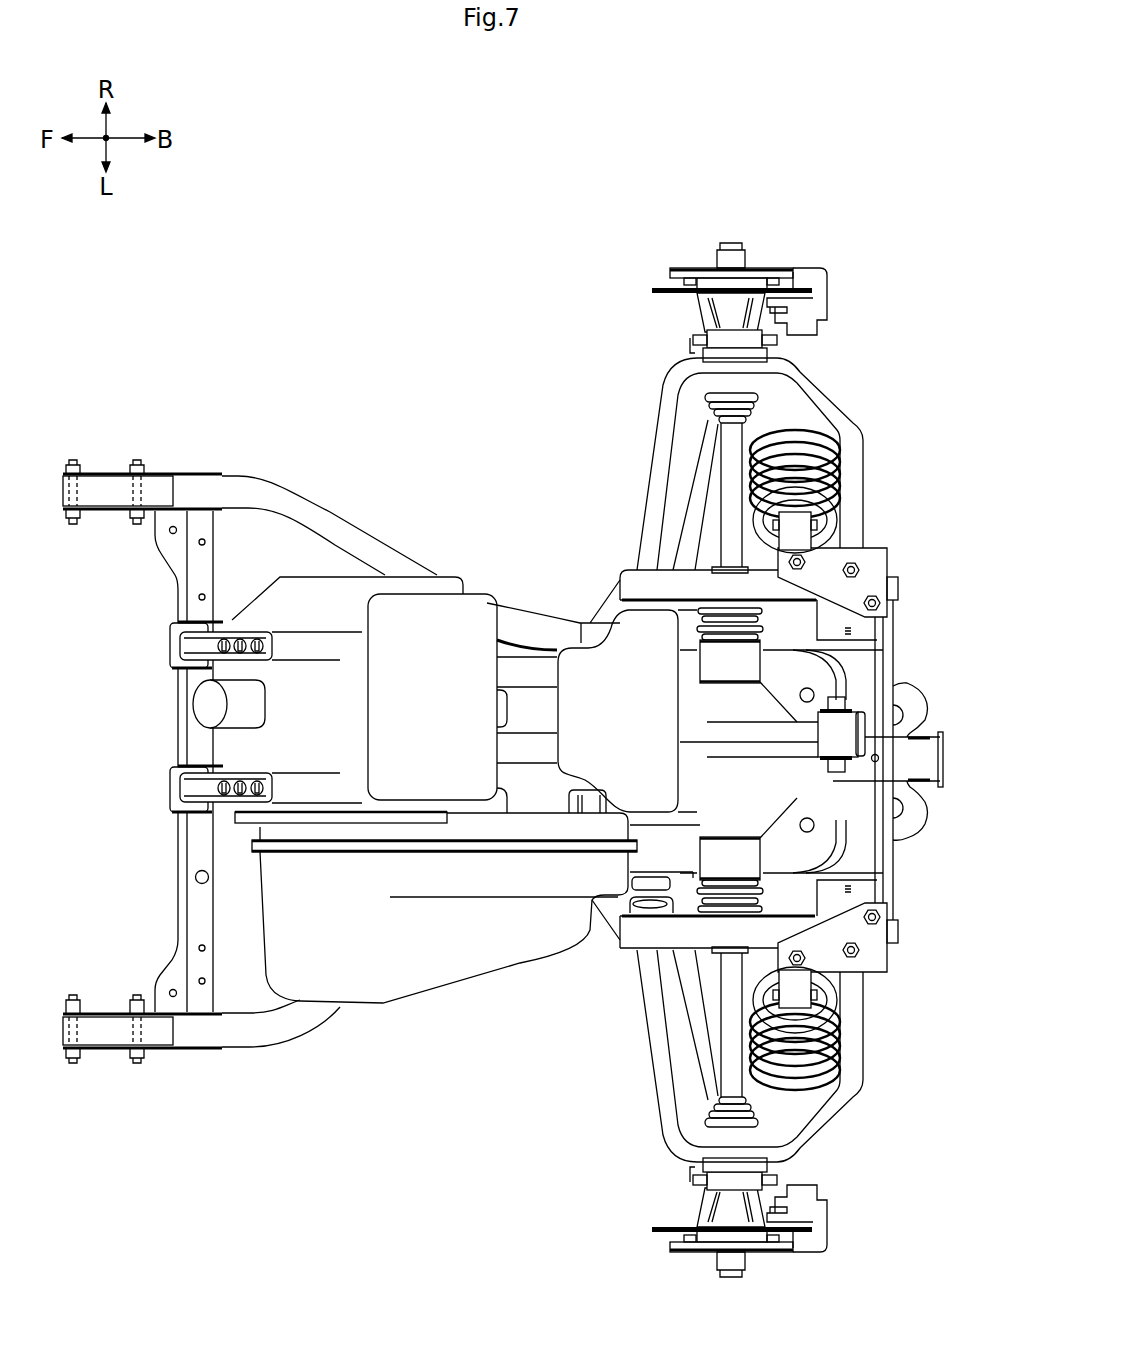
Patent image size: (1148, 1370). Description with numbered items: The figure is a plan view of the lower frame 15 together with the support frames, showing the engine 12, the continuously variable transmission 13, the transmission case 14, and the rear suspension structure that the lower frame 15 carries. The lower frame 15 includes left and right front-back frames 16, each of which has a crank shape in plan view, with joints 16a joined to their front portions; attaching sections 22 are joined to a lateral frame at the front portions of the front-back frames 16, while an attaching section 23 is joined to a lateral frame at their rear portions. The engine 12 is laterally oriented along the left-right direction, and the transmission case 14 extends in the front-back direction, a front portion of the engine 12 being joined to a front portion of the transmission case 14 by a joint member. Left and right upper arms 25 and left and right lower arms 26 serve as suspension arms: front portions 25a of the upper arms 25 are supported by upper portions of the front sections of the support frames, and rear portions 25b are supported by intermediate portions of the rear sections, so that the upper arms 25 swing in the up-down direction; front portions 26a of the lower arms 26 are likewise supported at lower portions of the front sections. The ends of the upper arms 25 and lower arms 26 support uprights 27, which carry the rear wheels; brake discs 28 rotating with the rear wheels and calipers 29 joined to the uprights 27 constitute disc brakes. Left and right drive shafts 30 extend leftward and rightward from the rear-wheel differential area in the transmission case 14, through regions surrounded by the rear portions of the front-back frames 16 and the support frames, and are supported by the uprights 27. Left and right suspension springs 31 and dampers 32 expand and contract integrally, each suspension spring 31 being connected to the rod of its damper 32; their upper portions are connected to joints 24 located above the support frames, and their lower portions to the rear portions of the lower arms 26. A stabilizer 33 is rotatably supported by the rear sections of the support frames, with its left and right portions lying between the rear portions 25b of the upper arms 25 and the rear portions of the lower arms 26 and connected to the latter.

The engine 12 is at (425, 618).
The continuously variable transmission 13 is at (420, 973).
The transmission case 14 is at (770, 787).
The lower frame 15 is at (238, 468).
The front-back frames 16 is at (273, 490).
The joints 16a is at (92, 470).
The attaching sections 22 is at (168, 640).
The attaching section 23 is at (865, 731).
The joints 24 is at (873, 570).
The upper arms 25 is at (726, 760).
The front portions of the upper arms 25a is at (662, 457).
The rear portions of the upper arms 25b is at (907, 1068).
The lower arms 26 is at (616, 760).
The front portions of the lower arms 26a is at (690, 497).
The uprights 27 is at (733, 333).
The brake discs 28 is at (668, 290).
The calipers 29 is at (822, 282).
The drive shafts 30 is at (728, 545).
The suspension springs 31 is at (810, 455).
The dampers 32 is at (842, 762).
The stabilizer 33 is at (890, 654).